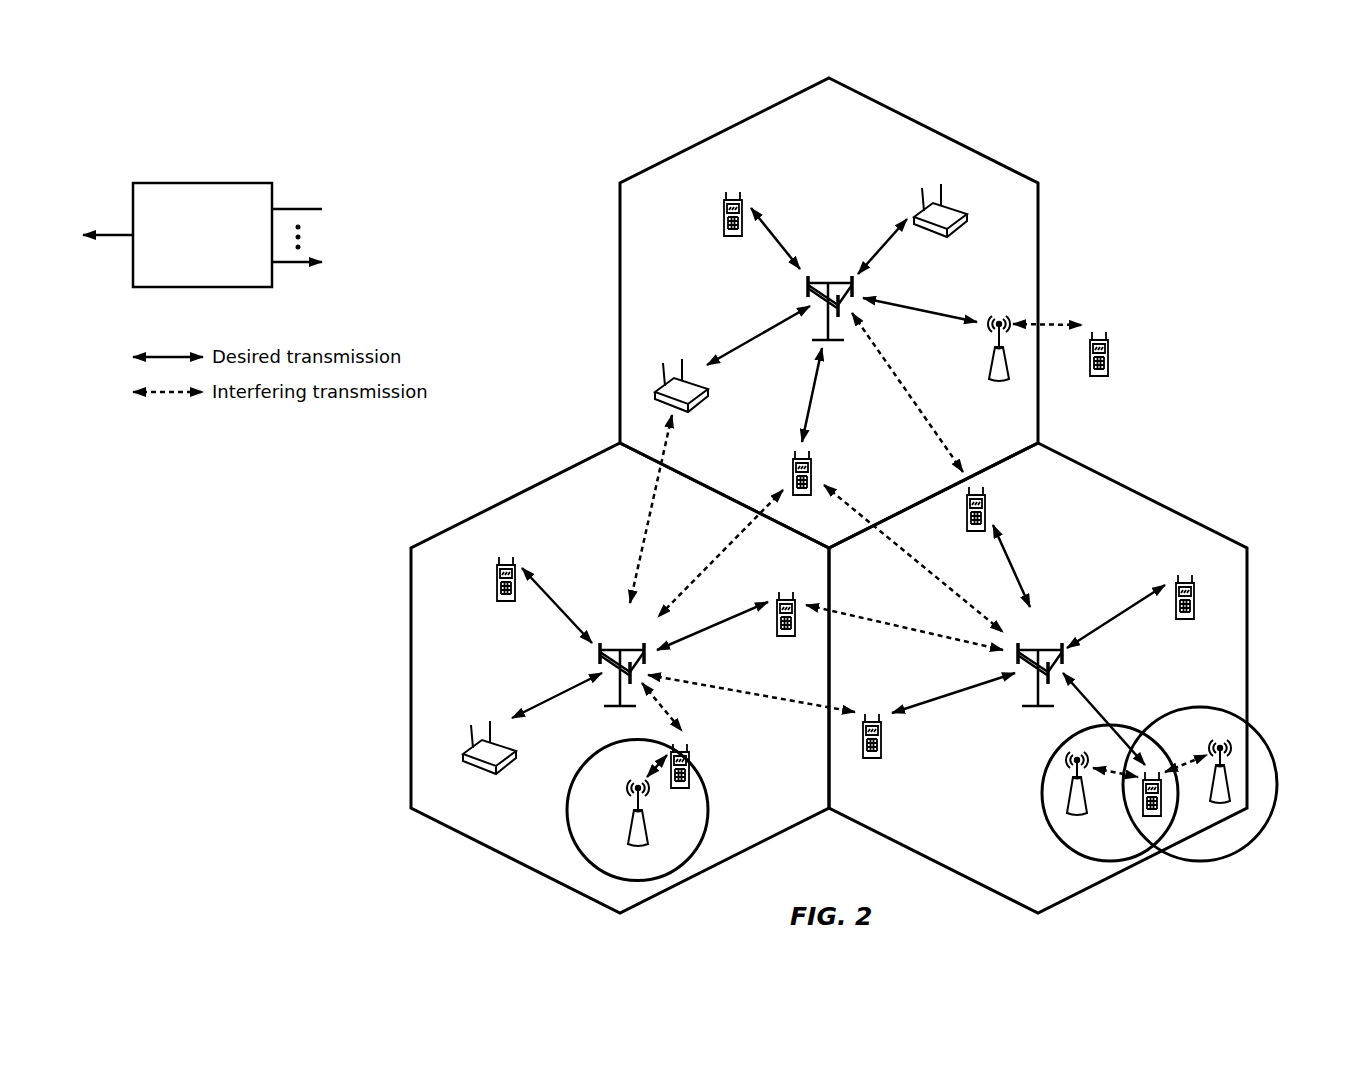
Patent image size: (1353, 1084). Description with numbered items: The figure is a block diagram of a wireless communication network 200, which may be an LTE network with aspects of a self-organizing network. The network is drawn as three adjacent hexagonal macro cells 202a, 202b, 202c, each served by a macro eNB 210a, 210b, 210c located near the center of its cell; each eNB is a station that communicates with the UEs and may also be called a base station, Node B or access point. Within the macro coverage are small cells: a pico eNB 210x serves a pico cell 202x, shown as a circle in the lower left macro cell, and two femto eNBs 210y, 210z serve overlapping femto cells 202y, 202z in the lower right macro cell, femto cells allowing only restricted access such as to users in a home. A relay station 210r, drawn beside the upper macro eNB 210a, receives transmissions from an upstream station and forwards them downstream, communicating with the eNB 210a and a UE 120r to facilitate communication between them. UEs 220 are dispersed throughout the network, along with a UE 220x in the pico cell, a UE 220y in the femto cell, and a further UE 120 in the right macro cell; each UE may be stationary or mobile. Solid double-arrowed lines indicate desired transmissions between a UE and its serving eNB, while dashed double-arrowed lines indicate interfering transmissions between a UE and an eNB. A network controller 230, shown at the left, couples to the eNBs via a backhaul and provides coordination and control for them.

The wireless communication network 200 is at (1186, 145).
The UE 120 is at (1184, 576).
The relay UE 120r is at (1108, 365).
The macro cell 202a is at (947, 119).
The macro cell 202b is at (515, 494).
The macro cell 202c is at (1155, 481).
The pico cell 202x is at (590, 756).
The femto cell 202y is at (1043, 760).
The femto cell 202z is at (1197, 706).
The macro eNB 210a is at (826, 281).
The macro eNB 210b is at (619, 646).
The macro eNB 210c is at (1039, 646).
The relay station 210r is at (988, 363).
The pico eNB 210x is at (648, 830).
The femto eNB 210y is at (1087, 806).
The femto eNB 210z is at (1230, 793).
The UE 220 is at (724, 207).
The UE 220x is at (690, 759).
The UE 220y is at (1143, 812).
The network controller 230 is at (198, 182).